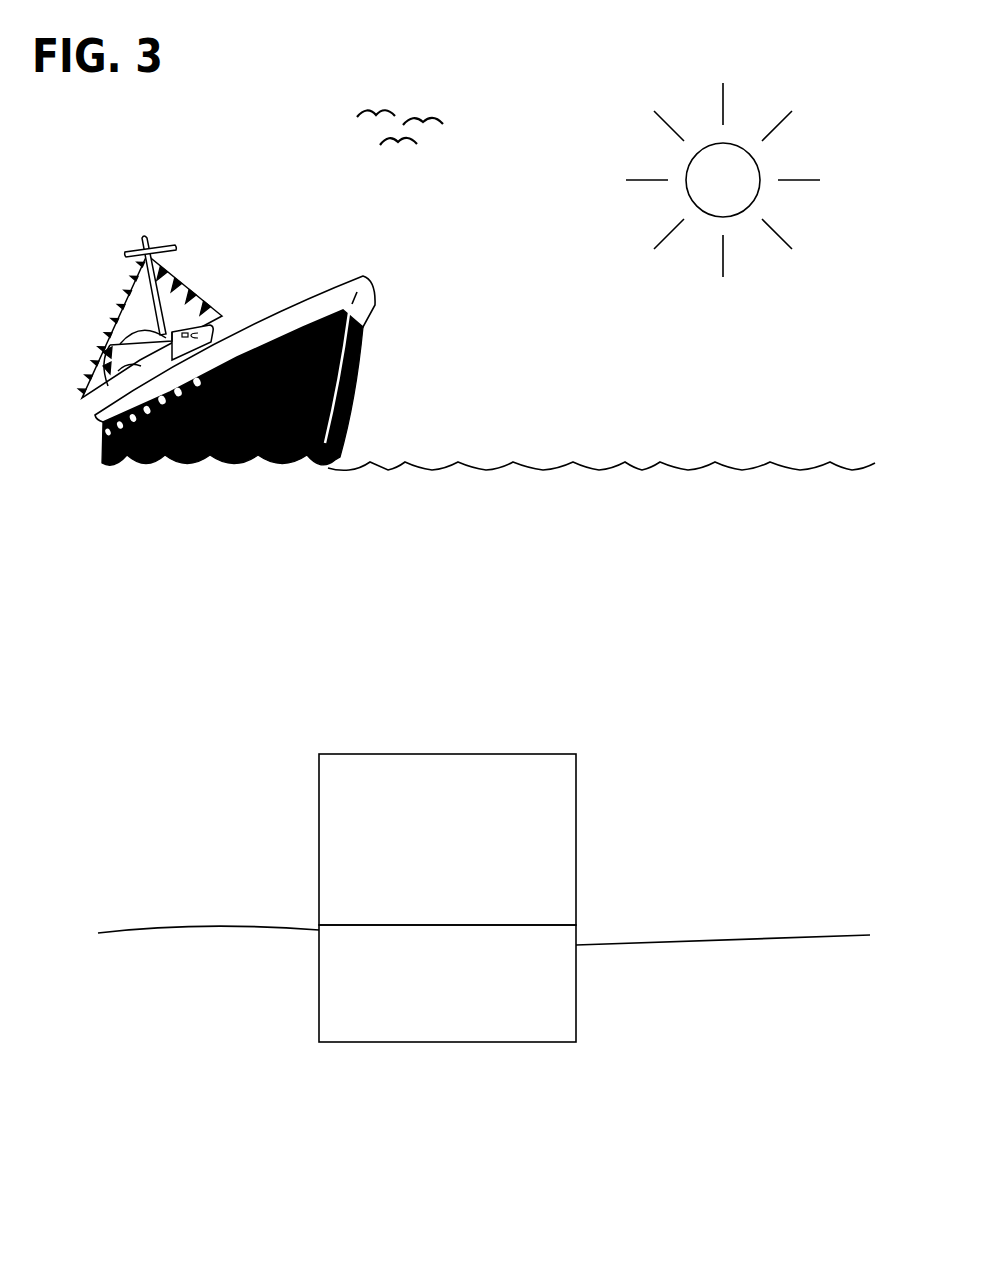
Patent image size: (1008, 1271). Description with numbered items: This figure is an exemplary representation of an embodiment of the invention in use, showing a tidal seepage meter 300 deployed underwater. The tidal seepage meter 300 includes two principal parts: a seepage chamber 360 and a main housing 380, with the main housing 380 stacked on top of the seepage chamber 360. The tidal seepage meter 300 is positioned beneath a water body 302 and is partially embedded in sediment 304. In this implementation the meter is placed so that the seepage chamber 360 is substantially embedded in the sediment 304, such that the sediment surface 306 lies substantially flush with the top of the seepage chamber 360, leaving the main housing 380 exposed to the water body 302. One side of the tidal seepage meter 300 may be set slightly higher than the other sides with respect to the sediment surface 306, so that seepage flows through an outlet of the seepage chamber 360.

The tidal seepage meter 300 is at (513, 898).
The water body 302 is at (740, 620).
The sediment 304 is at (826, 1133).
The sediment surface 306 is at (835, 935).
The seepage chamber 360 is at (648, 908).
The main housing 380 is at (557, 892).